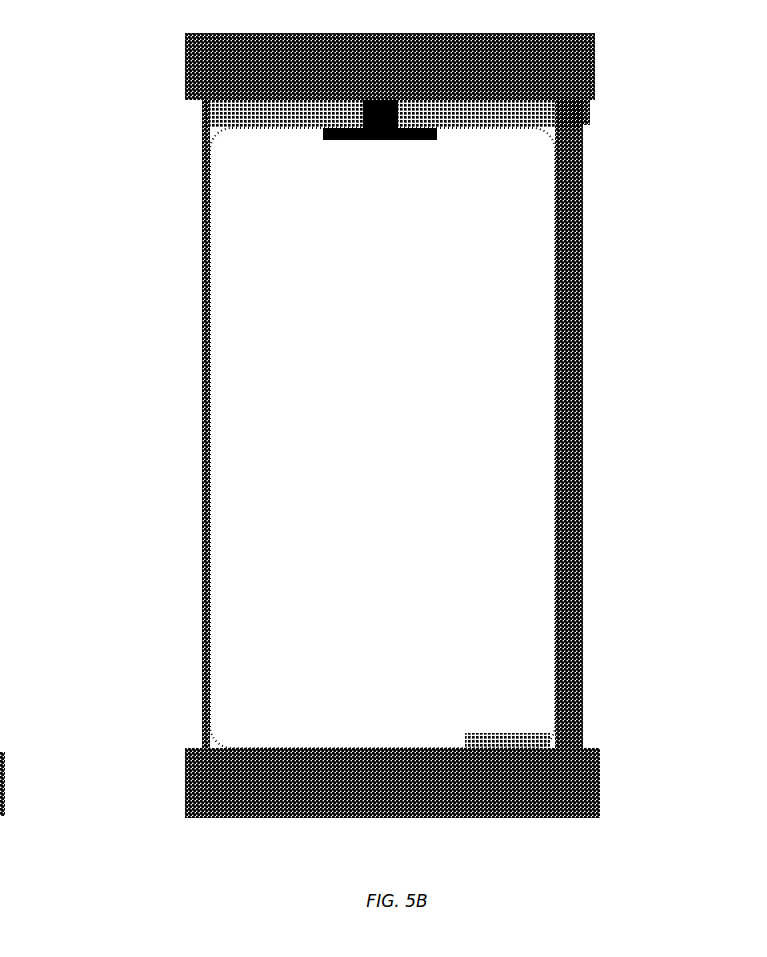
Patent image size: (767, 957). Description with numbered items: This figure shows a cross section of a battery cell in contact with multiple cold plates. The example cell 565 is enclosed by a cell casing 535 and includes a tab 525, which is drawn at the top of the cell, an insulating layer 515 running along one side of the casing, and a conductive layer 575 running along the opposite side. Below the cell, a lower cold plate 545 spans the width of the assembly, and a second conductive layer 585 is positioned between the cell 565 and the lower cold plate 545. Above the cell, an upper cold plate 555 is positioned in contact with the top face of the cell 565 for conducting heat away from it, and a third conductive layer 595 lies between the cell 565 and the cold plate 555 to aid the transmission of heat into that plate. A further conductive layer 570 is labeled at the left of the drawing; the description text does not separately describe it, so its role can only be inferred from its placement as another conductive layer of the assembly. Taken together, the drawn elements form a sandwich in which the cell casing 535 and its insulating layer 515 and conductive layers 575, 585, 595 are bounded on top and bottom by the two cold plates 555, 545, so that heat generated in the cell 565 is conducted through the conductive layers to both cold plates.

The upper cold plate 555 is at (595, 66).
The third conductive layer 595 is at (203, 101).
The tab 525 is at (575, 118).
The insulating layer 515 is at (203, 262).
The cell casing 535 is at (206, 300).
The cell 565 is at (376, 433).
The conductive layer 570 is at (0, 503).
The conductive layer 575 is at (583, 490).
The second conductive layer 585 is at (198, 750).
The lower cold plate 545 is at (188, 783).